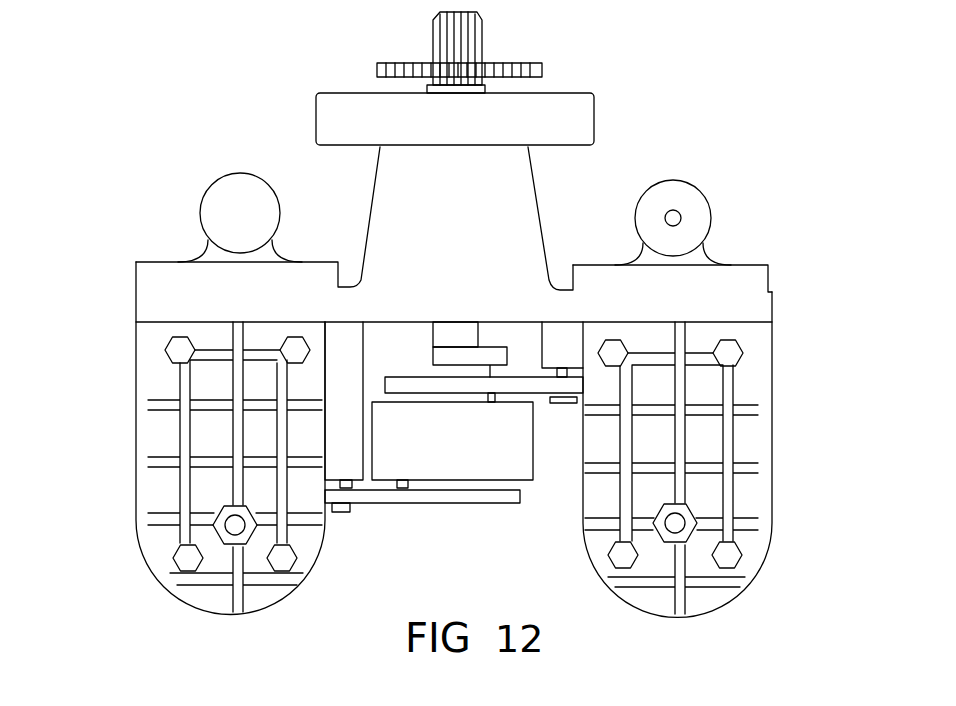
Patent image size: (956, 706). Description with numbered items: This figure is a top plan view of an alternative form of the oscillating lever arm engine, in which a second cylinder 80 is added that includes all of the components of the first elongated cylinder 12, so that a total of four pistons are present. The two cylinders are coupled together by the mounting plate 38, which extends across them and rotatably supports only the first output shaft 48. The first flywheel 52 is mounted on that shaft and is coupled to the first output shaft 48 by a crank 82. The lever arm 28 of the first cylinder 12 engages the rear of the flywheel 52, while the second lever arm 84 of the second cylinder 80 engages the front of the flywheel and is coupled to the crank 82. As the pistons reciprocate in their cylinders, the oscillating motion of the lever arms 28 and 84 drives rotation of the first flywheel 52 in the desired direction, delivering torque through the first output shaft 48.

The elongated cylinder 12 is at (135, 366).
The first lever arm 28 is at (387, 503).
The mounting plate 38 is at (768, 270).
The first output shaft 48 is at (433, 42).
The first flywheel 52 is at (528, 480).
The second cylinder 80 is at (773, 373).
The crank 82 is at (502, 365).
The second lever arm 84 is at (403, 377).